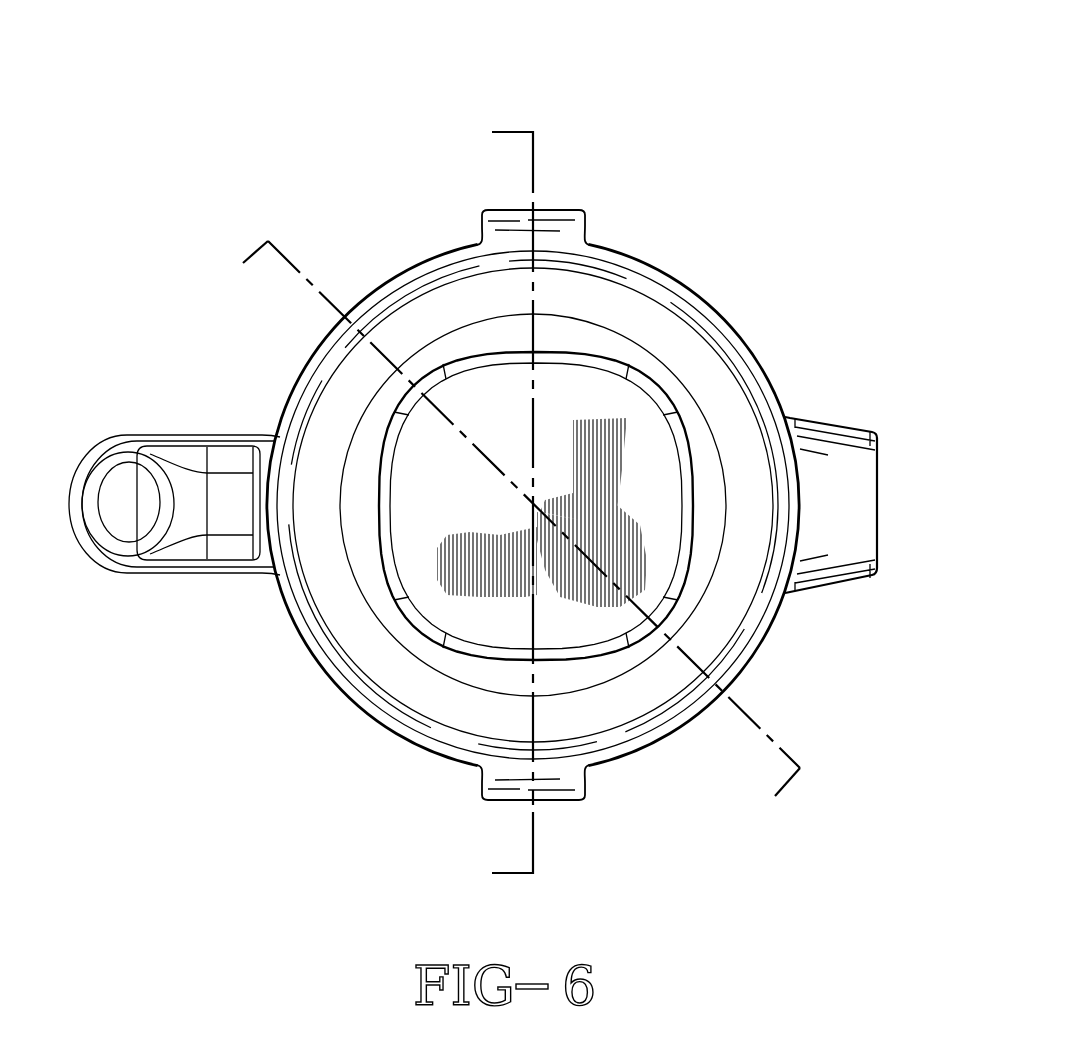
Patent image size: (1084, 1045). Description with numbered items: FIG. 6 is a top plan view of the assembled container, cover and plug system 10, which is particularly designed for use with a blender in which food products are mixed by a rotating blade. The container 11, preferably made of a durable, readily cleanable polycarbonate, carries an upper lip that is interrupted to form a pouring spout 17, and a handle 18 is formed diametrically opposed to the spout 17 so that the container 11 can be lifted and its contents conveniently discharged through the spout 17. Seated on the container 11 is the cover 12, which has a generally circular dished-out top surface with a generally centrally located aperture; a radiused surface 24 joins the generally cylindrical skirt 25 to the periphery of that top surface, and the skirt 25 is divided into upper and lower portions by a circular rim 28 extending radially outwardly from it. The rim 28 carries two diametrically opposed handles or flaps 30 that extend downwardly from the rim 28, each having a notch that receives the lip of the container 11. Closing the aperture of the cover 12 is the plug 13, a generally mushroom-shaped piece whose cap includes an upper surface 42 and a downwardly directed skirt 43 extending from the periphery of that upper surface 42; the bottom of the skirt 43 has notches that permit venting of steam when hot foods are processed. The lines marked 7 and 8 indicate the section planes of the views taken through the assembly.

The container, cover and plug system 10 is at (278, 115).
The section line 7- 7 is at (493, 502).
The section line 8- 8 is at (502, 539).
The container 11 is at (170, 583).
The cover 12 is at (651, 307).
The plug 13 is at (678, 375).
The pouring spout 17 is at (847, 523).
The handle 18 is at (130, 510).
The radiused surface 24 is at (328, 418).
The skirt 25 is at (303, 613).
The rim 28 is at (382, 698).
The handles 30 is at (553, 212).
The upper surface 42 is at (618, 505).
The skirt 43 is at (567, 655).